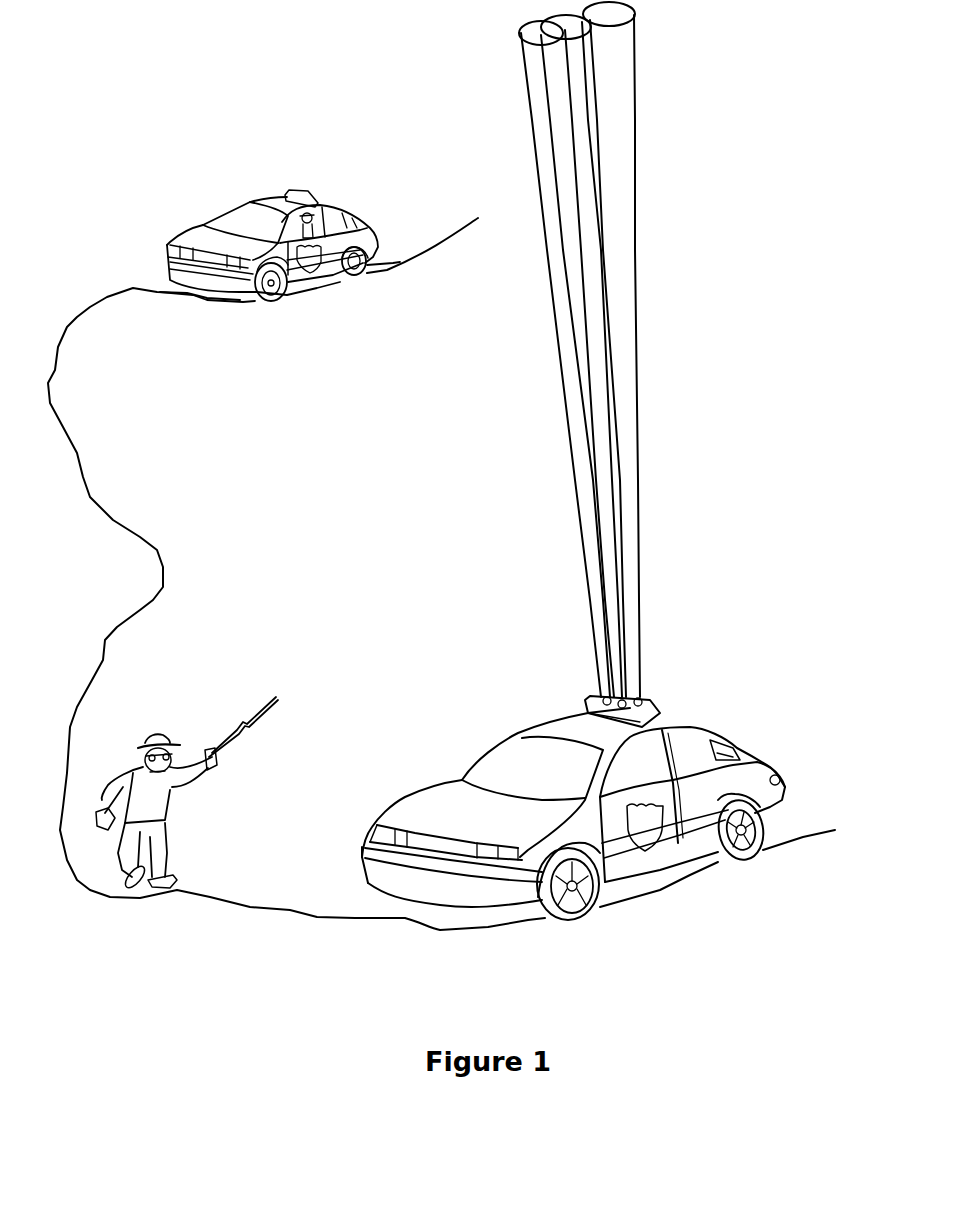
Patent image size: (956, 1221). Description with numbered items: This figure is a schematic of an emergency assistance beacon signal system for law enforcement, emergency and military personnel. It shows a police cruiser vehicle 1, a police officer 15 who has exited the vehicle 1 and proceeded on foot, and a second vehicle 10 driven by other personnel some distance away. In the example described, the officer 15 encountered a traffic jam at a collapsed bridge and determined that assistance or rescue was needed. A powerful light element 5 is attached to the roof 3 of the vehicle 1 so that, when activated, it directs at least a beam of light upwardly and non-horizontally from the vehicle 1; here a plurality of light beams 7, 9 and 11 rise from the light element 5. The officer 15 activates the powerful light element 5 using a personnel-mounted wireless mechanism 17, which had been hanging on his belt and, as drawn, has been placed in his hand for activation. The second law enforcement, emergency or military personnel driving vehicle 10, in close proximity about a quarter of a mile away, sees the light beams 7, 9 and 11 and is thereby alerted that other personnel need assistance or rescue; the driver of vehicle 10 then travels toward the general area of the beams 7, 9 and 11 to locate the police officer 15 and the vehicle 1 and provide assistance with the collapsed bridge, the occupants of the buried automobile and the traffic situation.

The vehicle 1 is at (467, 720).
The roof 3 is at (677, 713).
The powerful light element 5 is at (645, 707).
The light beam 7 is at (562, 323).
The light beam 9 is at (598, 413).
The light beam 11 is at (623, 363).
The vehicle 10 is at (242, 180).
The law enforcement, emergency and military personnel 15 is at (160, 723).
The personnel-mounted wireless mechanism 17 is at (261, 701).